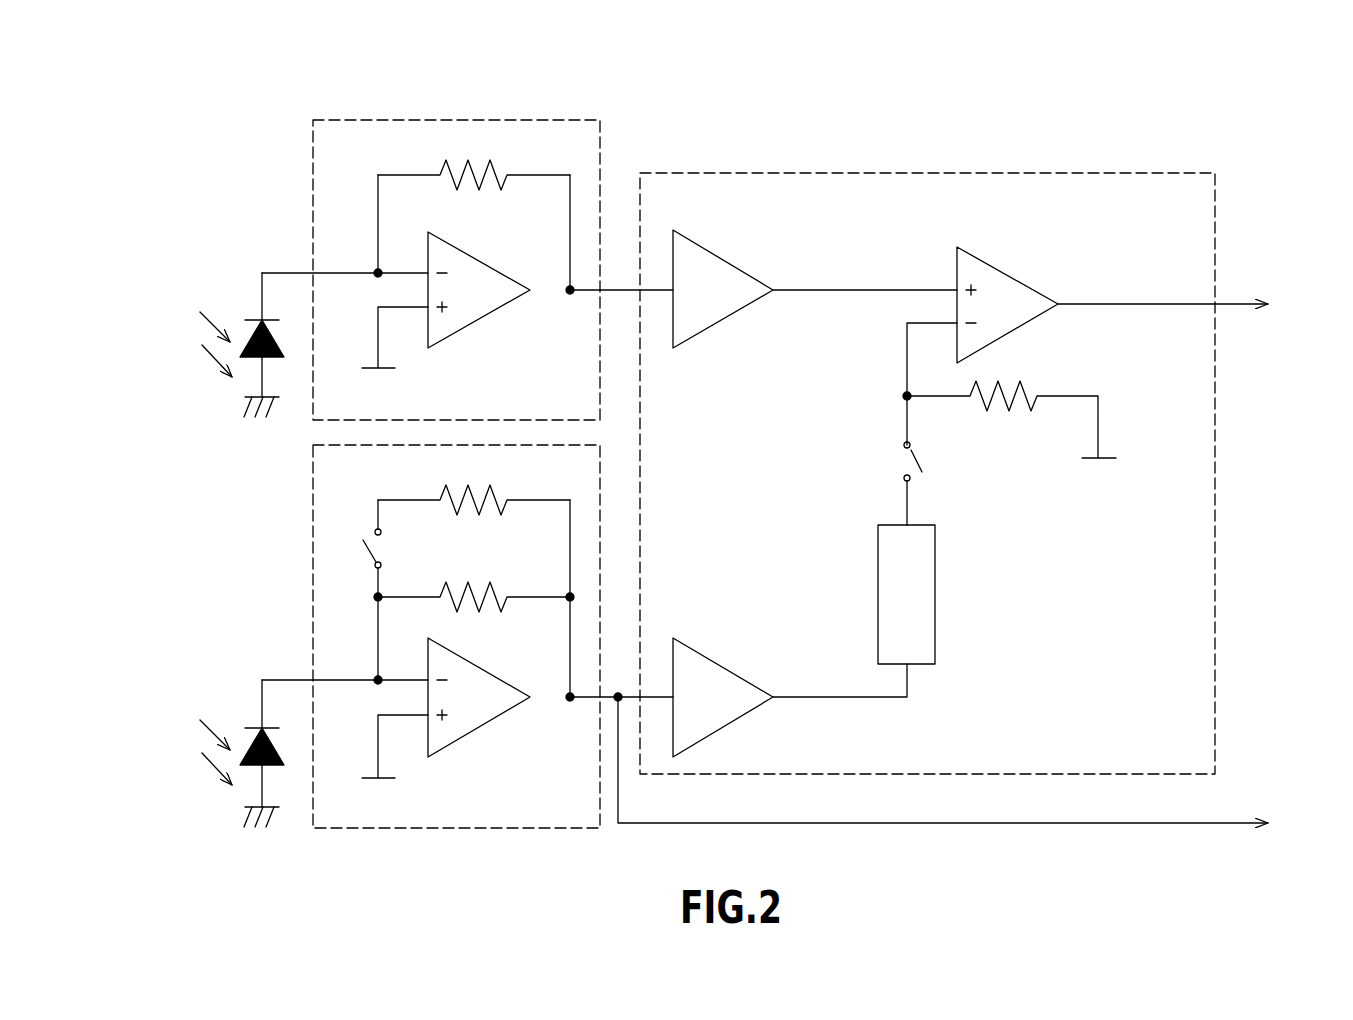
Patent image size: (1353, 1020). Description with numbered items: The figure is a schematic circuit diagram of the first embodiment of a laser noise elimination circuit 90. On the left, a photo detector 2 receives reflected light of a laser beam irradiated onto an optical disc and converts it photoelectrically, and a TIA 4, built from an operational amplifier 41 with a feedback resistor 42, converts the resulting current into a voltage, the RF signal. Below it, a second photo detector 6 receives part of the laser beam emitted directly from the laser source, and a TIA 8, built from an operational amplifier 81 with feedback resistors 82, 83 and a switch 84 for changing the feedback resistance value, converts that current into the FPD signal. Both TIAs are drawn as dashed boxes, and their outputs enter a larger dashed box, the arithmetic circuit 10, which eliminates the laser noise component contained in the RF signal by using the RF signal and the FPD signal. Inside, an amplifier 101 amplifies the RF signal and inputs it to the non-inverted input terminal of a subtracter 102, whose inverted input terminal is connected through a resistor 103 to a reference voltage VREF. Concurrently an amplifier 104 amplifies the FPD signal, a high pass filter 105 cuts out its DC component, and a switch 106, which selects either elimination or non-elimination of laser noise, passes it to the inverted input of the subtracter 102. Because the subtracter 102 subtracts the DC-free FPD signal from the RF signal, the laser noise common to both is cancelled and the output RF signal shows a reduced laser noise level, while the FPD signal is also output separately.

The photo detector 2 is at (205, 340).
The TIA 4 is at (368, 119).
The photo detector 6 is at (205, 750).
The TIA 8 is at (367, 829).
The arithmetic circuit 10 is at (838, 173).
The operational amplifier 41 is at (485, 261).
The feedback resistor 42 is at (477, 163).
The operational amplifier 81 is at (485, 668).
The feedback resistor 82 is at (477, 585).
The feedback resistor 83 is at (477, 486).
The switch 84 is at (382, 548).
The laser noise elimination circuit 90 is at (742, 77).
The amplifier 101 is at (732, 259).
The subtracter 102 is at (1017, 274).
The resistor 103 is at (1003, 393).
The amplifier 104 is at (732, 664).
The high pass filter 105 is at (937, 572).
The switch 106 is at (905, 461).